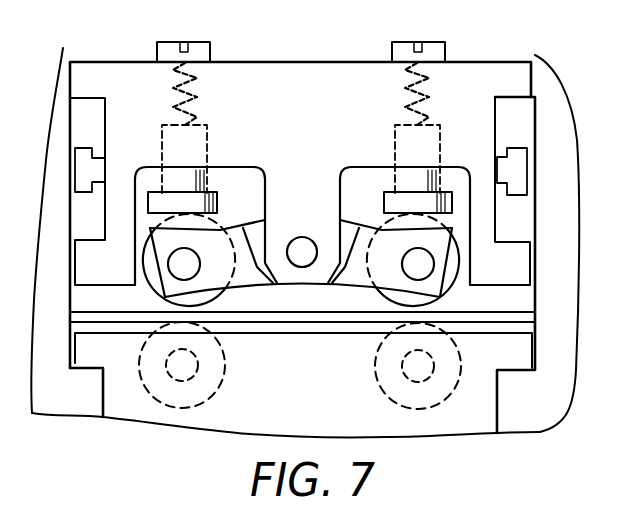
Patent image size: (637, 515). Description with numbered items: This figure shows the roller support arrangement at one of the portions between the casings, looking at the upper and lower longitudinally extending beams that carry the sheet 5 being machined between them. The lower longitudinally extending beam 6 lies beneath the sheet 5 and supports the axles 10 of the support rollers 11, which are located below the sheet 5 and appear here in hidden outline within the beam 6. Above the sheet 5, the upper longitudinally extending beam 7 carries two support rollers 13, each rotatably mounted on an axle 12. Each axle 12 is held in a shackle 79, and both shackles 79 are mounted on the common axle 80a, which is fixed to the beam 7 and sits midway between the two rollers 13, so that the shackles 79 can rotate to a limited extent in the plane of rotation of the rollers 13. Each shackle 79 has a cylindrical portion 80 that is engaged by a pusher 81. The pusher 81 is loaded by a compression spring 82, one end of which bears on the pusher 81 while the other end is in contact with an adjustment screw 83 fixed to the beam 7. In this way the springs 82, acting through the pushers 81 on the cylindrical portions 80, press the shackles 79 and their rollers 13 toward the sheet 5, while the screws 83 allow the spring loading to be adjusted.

The sheet 5 is at (530, 316).
The lower longitudinally extending beam 6 is at (478, 425).
The upper longitudinally extending beam 7 is at (286, 72).
The axle 10 is at (193, 360).
The support roller 11 is at (383, 378).
The axle 12 is at (175, 268).
The support roller 13 is at (440, 268).
The shackle 79 is at (228, 232).
The cylindrical portion 80 is at (152, 217).
The common axle 80a is at (303, 237).
The pusher 81 is at (390, 193).
The compression spring 82 is at (408, 92).
The adjustment screw 83 is at (205, 45).